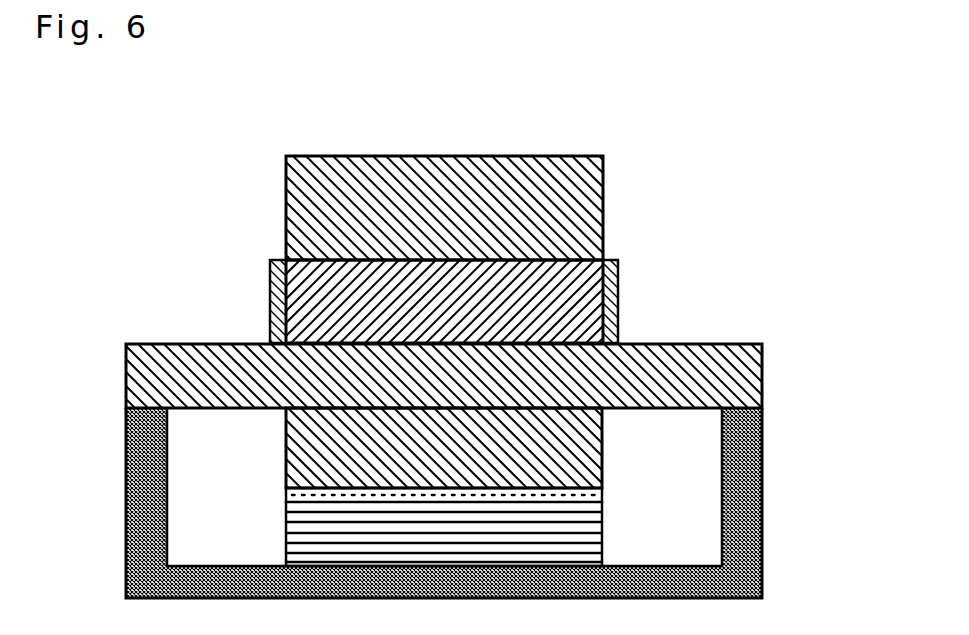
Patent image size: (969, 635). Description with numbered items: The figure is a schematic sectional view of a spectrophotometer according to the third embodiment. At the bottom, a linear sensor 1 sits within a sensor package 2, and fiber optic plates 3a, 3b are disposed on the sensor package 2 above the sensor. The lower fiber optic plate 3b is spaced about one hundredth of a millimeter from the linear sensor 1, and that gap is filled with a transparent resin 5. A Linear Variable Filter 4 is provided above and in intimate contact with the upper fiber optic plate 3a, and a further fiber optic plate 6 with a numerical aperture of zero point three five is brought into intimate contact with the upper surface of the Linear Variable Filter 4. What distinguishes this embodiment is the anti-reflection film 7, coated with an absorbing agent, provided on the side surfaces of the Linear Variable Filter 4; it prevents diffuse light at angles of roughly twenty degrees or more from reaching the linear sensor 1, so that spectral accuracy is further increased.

The linear sensor 1 is at (600, 543).
The sensor package 2 is at (733, 573).
The fiber optic plate 3a is at (677, 360).
The fiber optic plate 3b is at (587, 450).
The Linear Variable Filter 4 is at (568, 300).
The transparent resin 5 is at (590, 497).
The fiber optic plate 6 is at (573, 198).
The anti-reflection film 7 is at (270, 280).